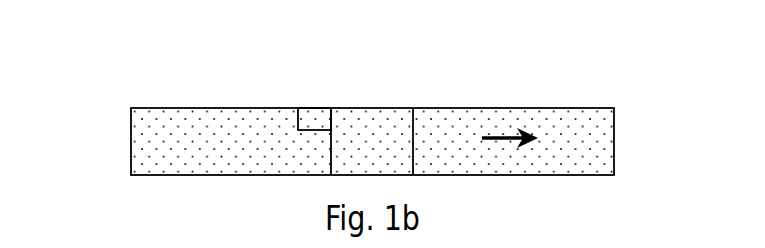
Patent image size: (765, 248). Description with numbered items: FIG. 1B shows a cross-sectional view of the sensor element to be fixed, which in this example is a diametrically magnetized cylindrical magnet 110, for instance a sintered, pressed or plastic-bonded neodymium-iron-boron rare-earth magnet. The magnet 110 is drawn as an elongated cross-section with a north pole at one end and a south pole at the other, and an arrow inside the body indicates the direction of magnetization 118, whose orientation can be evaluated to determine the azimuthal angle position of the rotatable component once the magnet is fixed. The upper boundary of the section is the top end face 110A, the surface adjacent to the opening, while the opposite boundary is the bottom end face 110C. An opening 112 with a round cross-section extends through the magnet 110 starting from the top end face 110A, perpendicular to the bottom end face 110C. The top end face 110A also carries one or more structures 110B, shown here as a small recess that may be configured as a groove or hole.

The magnet 110 is at (345, 96).
The top end face 110A is at (286, 106).
The structures 110B is at (328, 91).
The bottom end face 110C is at (214, 152).
The opening 112 is at (404, 114).
The direction of magnetization 118 is at (521, 107).